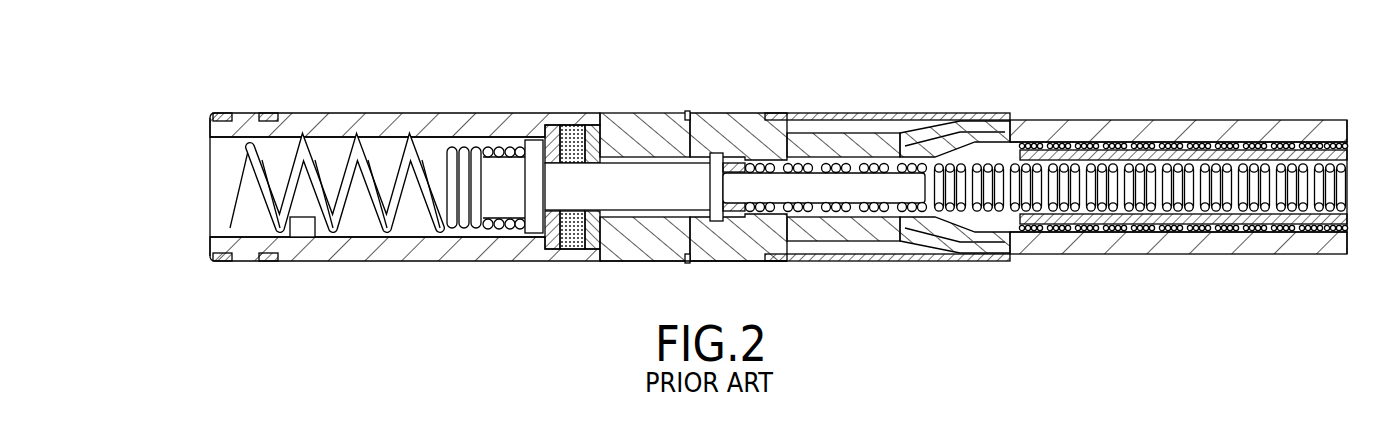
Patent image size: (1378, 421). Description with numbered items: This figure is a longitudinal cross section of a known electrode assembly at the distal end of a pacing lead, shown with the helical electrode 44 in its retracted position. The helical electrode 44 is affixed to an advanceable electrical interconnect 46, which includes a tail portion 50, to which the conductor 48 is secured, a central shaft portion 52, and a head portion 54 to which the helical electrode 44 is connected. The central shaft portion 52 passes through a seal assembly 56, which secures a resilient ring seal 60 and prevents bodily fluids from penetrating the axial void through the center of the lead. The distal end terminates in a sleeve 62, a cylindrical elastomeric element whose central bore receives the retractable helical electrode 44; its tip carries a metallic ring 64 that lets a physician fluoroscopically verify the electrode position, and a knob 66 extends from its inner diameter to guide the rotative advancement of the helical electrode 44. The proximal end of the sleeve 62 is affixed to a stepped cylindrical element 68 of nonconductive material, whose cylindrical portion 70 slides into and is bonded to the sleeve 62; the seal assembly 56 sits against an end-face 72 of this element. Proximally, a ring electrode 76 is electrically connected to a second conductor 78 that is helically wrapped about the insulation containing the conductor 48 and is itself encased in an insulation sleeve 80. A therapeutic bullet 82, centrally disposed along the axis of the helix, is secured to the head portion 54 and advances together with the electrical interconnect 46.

The helical electrode 44 is at (230, 186).
The electrical interconnect 46 is at (652, 160).
The conductor 48 is at (1108, 160).
The tail portion 50 is at (778, 187).
The central shaft portion 52 is at (614, 165).
The head portion 54 is at (533, 140).
The seal assembly 56 is at (570, 247).
The resilient ring seal 60 is at (573, 140).
The sleeve 62 is at (357, 114).
The metallic ring 64 is at (262, 113).
The knob 66 is at (298, 226).
The stepped cylindrical element 68 is at (714, 116).
The cylindrical portion 70 is at (640, 252).
The end-face 72 is at (600, 142).
The ring electrode 76 is at (887, 113).
The second conductor 78 is at (1321, 228).
The insulation sleeve 80 is at (1267, 122).
The therapeutic bullet 82 is at (387, 170).